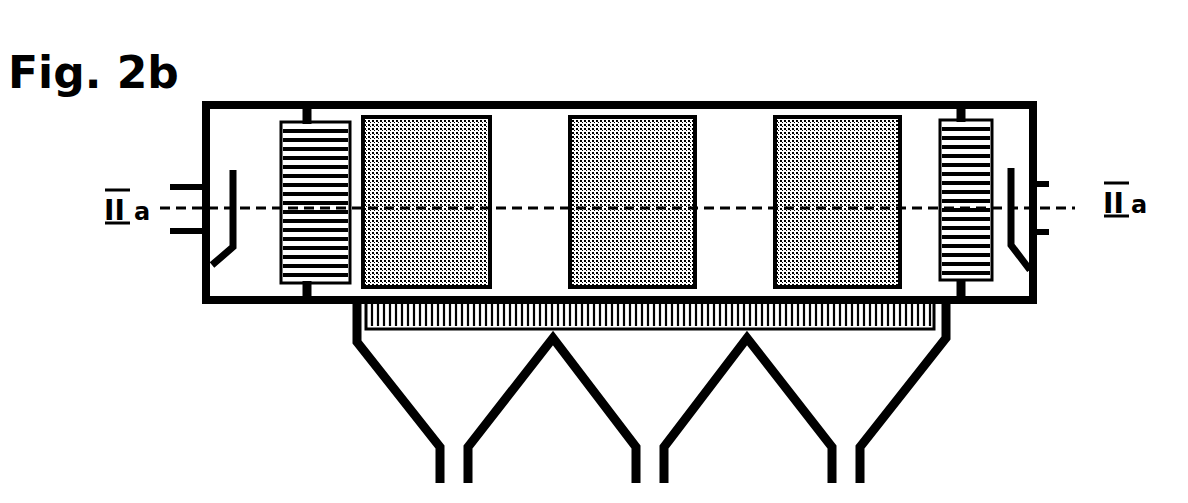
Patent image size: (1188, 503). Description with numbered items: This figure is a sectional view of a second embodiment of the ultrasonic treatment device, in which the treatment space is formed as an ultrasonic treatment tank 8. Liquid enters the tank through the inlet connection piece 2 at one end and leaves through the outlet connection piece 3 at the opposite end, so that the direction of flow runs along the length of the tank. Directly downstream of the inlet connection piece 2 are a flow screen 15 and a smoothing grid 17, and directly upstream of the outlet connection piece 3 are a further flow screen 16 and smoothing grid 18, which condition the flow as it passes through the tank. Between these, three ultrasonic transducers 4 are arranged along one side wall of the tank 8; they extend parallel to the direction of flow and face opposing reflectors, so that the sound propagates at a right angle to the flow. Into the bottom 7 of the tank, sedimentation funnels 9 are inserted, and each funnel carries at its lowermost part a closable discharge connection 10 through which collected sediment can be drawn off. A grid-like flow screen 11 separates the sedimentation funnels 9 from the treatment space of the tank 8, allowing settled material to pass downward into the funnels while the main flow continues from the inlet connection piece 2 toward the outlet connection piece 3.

The inlet connection piece 2 is at (188, 205).
The outlet connection piece 3 is at (1037, 205).
The ultrasonic transducers 4 is at (430, 143).
The bottom 7 is at (983, 304).
The ultrasonic treatment tank 8 is at (513, 102).
The sedimentation funnels 9 is at (455, 388).
The closable discharge connections 10 is at (455, 463).
The grid-like flow screen 11 is at (400, 328).
The flow screen 15 is at (213, 265).
The flow screen 16 is at (1030, 270).
The smoothing grid 17 is at (320, 142).
The smoothing grid 18 is at (963, 147).